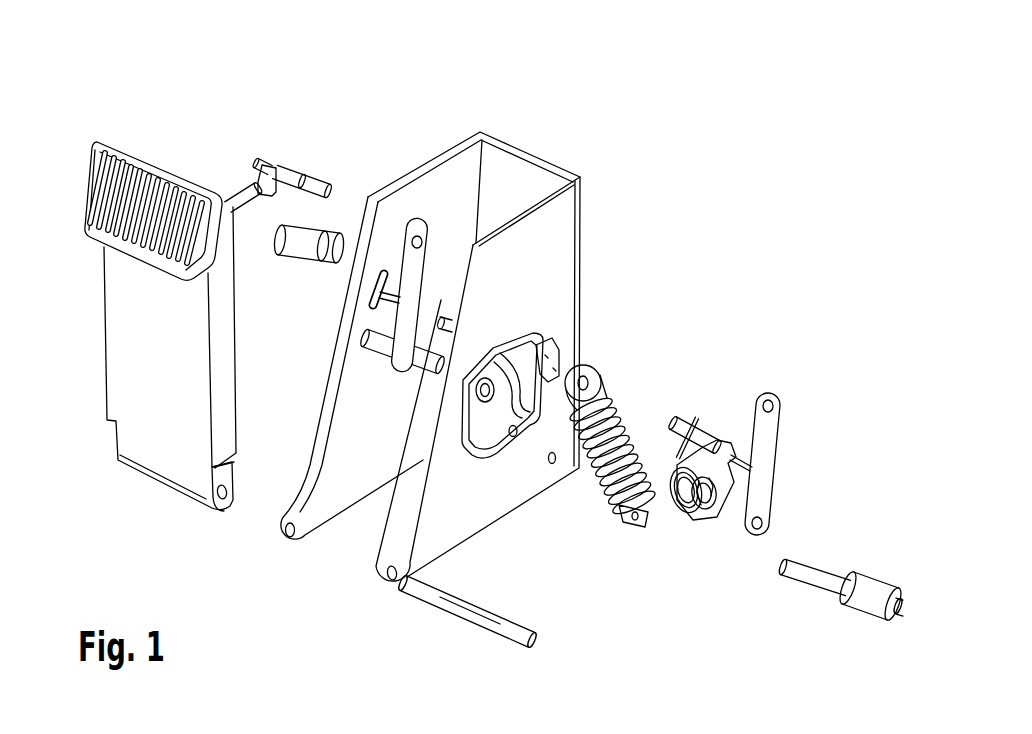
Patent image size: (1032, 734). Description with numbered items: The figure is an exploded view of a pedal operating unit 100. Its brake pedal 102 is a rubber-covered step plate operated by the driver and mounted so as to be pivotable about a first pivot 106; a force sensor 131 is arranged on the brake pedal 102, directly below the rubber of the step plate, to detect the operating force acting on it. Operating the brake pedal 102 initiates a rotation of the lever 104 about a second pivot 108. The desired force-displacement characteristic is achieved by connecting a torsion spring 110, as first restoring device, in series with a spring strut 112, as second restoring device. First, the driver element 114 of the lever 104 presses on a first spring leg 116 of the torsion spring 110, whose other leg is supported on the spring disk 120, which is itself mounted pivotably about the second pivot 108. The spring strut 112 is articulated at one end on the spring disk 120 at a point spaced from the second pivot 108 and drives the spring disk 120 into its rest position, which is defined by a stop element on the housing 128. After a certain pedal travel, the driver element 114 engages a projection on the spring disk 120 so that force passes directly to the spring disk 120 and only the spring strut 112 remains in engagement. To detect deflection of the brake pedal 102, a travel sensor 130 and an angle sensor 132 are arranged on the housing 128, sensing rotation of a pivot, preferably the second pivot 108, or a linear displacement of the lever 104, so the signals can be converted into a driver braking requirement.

The pedal operating unit 100 is at (744, 76).
The brake pedal 102 is at (113, 197).
The lever 104 is at (417, 283).
The first pivot 106 is at (453, 603).
The second pivot 108 is at (425, 365).
The torsion spring 110 is at (673, 513).
The spring strut 112 is at (605, 387).
The driver element 114 is at (737, 460).
The first spring leg 116 is at (676, 458).
The spring disk 120 is at (723, 483).
The housing 128 is at (512, 180).
The travel sensor 130 is at (303, 245).
The force sensor 131 is at (178, 165).
The angle sensor 132 is at (560, 357).